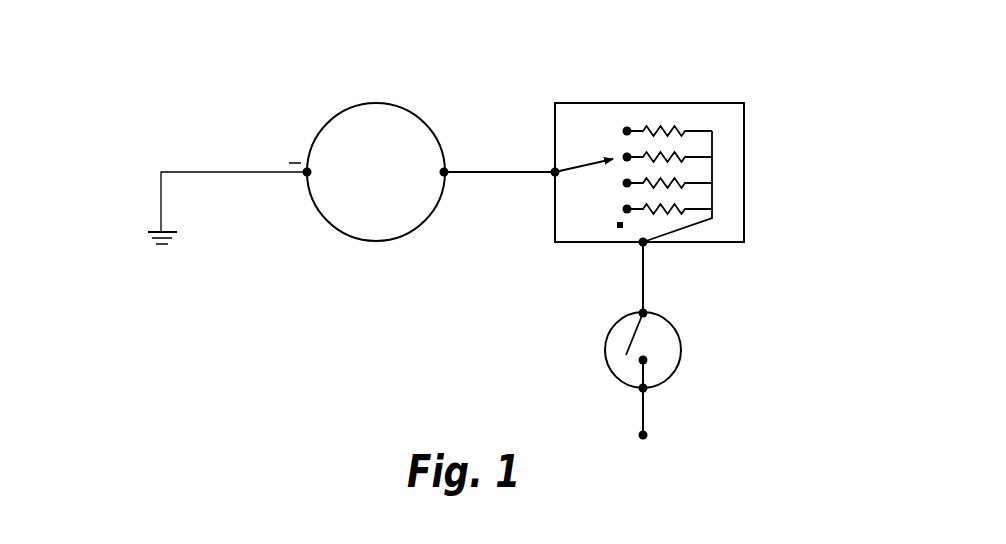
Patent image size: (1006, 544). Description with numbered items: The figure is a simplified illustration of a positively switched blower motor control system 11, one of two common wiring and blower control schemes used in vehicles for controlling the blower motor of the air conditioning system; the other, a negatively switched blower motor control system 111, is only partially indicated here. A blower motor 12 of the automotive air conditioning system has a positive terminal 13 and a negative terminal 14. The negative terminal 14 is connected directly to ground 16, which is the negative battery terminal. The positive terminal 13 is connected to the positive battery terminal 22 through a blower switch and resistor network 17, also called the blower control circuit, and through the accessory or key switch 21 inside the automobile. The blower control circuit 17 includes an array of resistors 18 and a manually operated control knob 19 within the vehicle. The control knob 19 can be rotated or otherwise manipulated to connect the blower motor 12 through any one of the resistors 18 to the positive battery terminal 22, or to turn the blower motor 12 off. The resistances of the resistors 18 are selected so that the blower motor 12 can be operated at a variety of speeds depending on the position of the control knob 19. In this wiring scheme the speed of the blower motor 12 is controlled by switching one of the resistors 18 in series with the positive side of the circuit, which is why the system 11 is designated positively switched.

The positively switched blower motor control system 11 is at (270, 84).
The blower motor 12 is at (400, 106).
The positive terminal 13 is at (447, 177).
The negative terminal 14 is at (304, 177).
The ground 16 is at (150, 222).
The blower switch and resistor network 17 is at (608, 97).
The array of resistors 18 is at (673, 117).
The manually operated control knob 19 is at (561, 160).
The accessory or key switch 21 is at (680, 366).
The positive battery terminal 22 is at (634, 443).
The negatively switched blower motor control system 111 is at (307, 543).